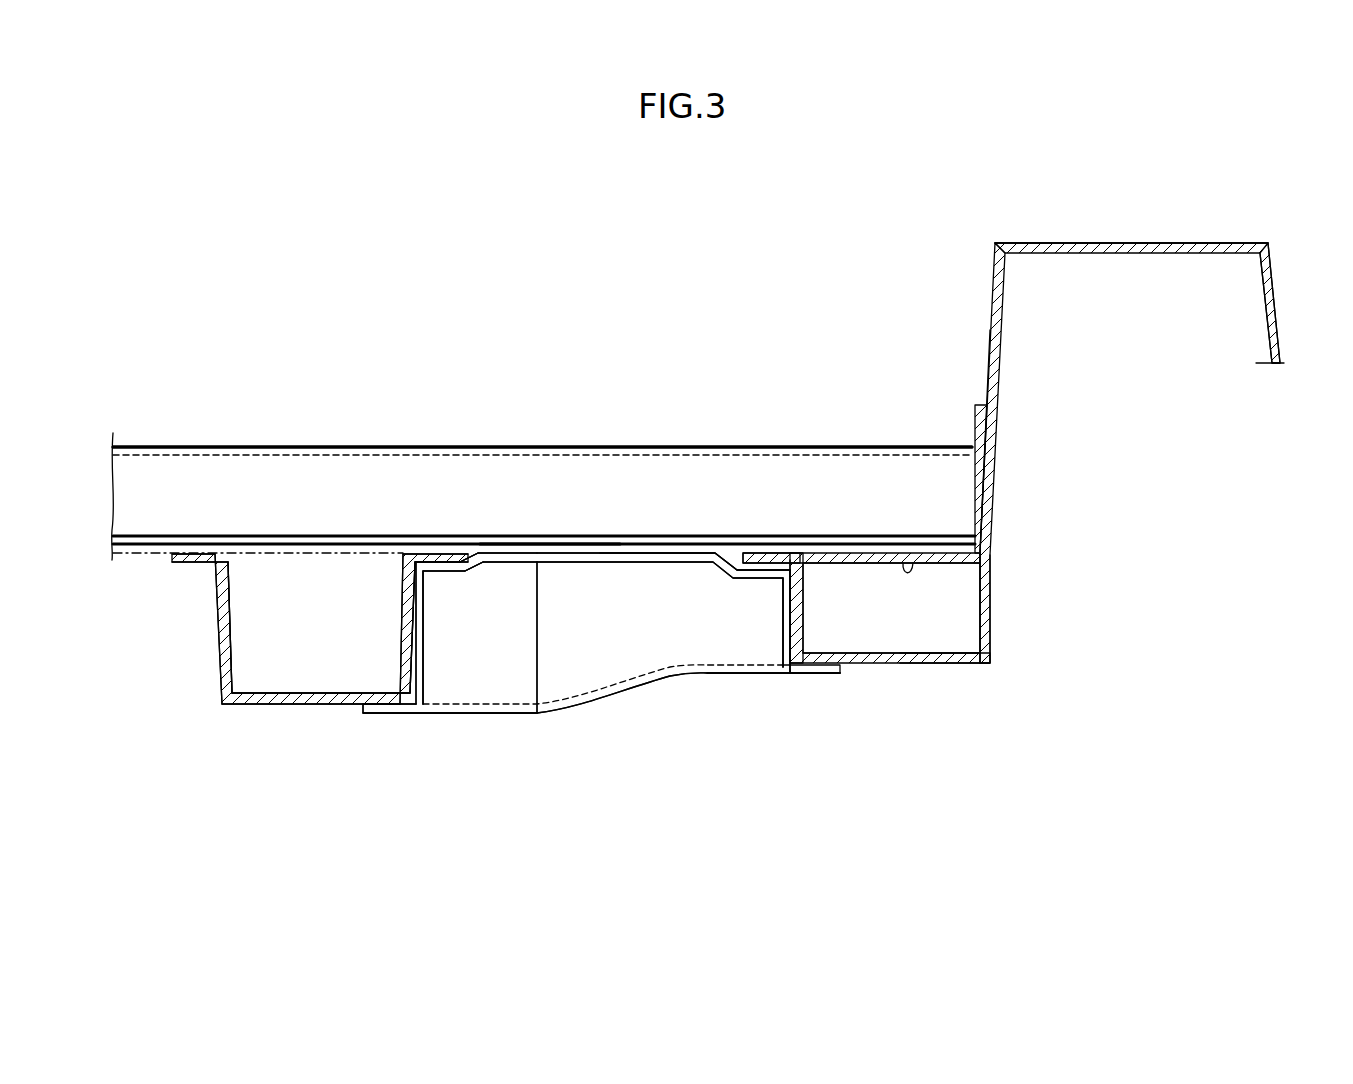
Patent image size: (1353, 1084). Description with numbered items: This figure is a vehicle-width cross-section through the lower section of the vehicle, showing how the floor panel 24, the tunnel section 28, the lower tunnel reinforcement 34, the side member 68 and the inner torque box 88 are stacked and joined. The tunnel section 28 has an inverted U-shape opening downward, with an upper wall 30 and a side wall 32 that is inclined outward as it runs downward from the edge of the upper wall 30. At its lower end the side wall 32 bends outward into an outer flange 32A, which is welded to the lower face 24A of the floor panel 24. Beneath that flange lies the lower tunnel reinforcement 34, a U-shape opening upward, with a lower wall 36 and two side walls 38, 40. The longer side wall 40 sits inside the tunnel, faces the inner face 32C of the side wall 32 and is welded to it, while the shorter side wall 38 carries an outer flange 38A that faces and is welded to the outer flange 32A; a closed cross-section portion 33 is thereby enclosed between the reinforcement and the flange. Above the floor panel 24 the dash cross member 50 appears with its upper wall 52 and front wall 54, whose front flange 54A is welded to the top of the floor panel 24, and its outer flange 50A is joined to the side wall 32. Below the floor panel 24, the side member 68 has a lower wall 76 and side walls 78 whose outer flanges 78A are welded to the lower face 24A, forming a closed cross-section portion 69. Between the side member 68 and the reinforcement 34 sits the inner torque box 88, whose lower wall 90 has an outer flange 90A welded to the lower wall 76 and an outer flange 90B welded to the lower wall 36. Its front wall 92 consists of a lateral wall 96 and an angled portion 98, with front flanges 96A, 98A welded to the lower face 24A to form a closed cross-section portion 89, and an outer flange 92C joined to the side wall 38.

The floor panel 24 is at (848, 563).
The lower face of floor panel 24A is at (907, 553).
The tunnel section 28 is at (1152, 242).
The upper wall 30 is at (1082, 242).
The side wall 32 is at (990, 298).
The outer flange 32A is at (808, 553).
The inner face of side wall 32C is at (1000, 350).
The closed cross-section portion 33 is at (872, 630).
The lower tunnel reinforcement 34 is at (950, 667).
The lower wall 36 is at (913, 667).
The side wall 38 is at (790, 607).
The outer flange 38A is at (768, 563).
The side wall 40 is at (990, 587).
The dash cross member 50 is at (530, 445).
The outer flange 50A is at (977, 433).
The upper wall 52 is at (603, 446).
The front wall 54 is at (432, 463).
The front flange 54A is at (547, 535).
The side member 68 is at (217, 668).
The closed cross-section portion 69 is at (303, 640).
The lower wall 76 is at (303, 707).
The side wall 78 is at (225, 637).
The outer flange 78A is at (197, 563).
The inner torque box 88 is at (715, 752).
The closed cross-section portion 89 is at (578, 637).
The lower wall 90 is at (562, 705).
The outer flange 90A is at (387, 713).
The outer flange 90B is at (815, 677).
The front wall 92 is at (628, 633).
The outer flange 92C is at (786, 625).
The lateral wall 96 is at (488, 693).
The front flange 96A is at (490, 560).
The angled portion 98 is at (632, 663).
The front flange 98A is at (667, 553).